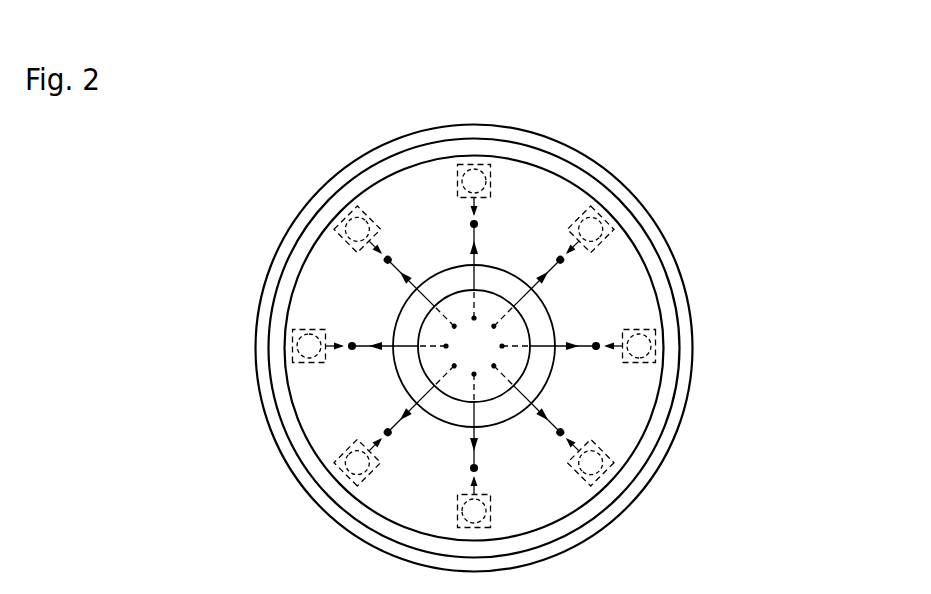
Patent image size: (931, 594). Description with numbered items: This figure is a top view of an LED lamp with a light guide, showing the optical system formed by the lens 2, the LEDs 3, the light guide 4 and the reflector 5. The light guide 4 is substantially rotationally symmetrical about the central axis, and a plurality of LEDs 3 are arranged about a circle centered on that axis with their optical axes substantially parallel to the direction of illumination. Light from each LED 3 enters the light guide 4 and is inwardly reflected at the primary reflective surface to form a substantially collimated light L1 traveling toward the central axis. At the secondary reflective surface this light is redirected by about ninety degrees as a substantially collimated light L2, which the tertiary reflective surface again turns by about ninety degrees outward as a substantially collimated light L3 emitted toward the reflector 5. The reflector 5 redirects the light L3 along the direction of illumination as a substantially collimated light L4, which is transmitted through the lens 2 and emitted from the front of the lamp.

The lens 2 is at (630, 194).
The LEDs 3 is at (651, 327).
The light guide 4 is at (493, 294).
The reflector 5 is at (555, 192).
The substantially collimated light L1 is at (614, 350).
The substantially collimated light L2 is at (503, 348).
The substantially collimated light L3 is at (562, 344).
The substantially collimated light L4 is at (596, 342).